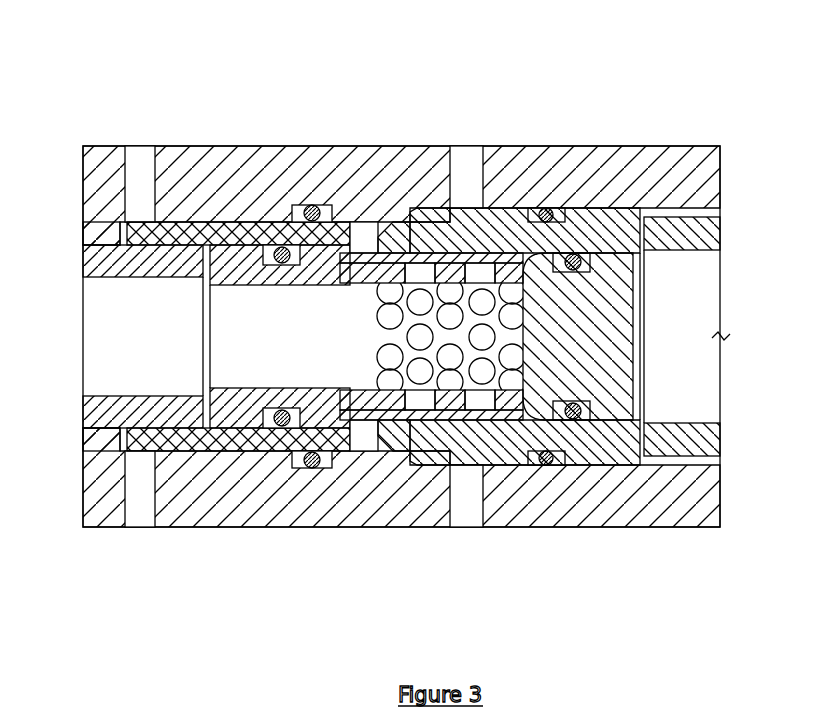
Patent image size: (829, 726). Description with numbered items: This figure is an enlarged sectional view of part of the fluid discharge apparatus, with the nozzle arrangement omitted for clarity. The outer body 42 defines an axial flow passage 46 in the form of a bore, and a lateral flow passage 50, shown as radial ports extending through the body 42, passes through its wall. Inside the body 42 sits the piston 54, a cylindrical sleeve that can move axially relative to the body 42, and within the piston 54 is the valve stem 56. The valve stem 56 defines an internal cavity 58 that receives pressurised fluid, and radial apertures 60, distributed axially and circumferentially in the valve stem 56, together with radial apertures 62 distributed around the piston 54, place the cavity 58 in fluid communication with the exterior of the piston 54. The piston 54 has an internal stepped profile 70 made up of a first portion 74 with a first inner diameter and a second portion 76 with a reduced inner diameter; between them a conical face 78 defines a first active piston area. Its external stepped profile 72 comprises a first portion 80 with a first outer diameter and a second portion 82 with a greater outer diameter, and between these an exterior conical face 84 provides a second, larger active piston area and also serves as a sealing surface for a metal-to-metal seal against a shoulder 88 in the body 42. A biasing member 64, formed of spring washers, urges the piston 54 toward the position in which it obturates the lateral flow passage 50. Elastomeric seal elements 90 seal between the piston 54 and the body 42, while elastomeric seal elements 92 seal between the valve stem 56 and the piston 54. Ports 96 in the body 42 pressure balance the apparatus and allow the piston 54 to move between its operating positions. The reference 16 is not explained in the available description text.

The coupling assembly 16 is at (692, 106).
The body 42 is at (374, 176).
The axial flow passage 46 is at (677, 268).
The lateral flow passage 50 is at (487, 172).
The piston 54 is at (231, 443).
The valve stem 56 is at (197, 417).
The internal cavity 58 is at (200, 175).
The radial apertures 60 is at (395, 425).
The radial apertures 62 is at (353, 440).
The biasing member 64 is at (687, 445).
The internal stepped profile 70 is at (342, 230).
The external stepped profile 72 is at (382, 222).
The first portion 74 is at (167, 245).
The second portion 76 is at (485, 250).
The conical face 78 is at (305, 470).
The first portion 80 is at (195, 222).
The second portion 82 is at (437, 210).
The exterior conical face 84 is at (414, 219).
The shoulder 88 is at (392, 450).
The seal elements 90 is at (310, 205).
The seal elements 92 is at (280, 245).
The ports 96 is at (150, 165).